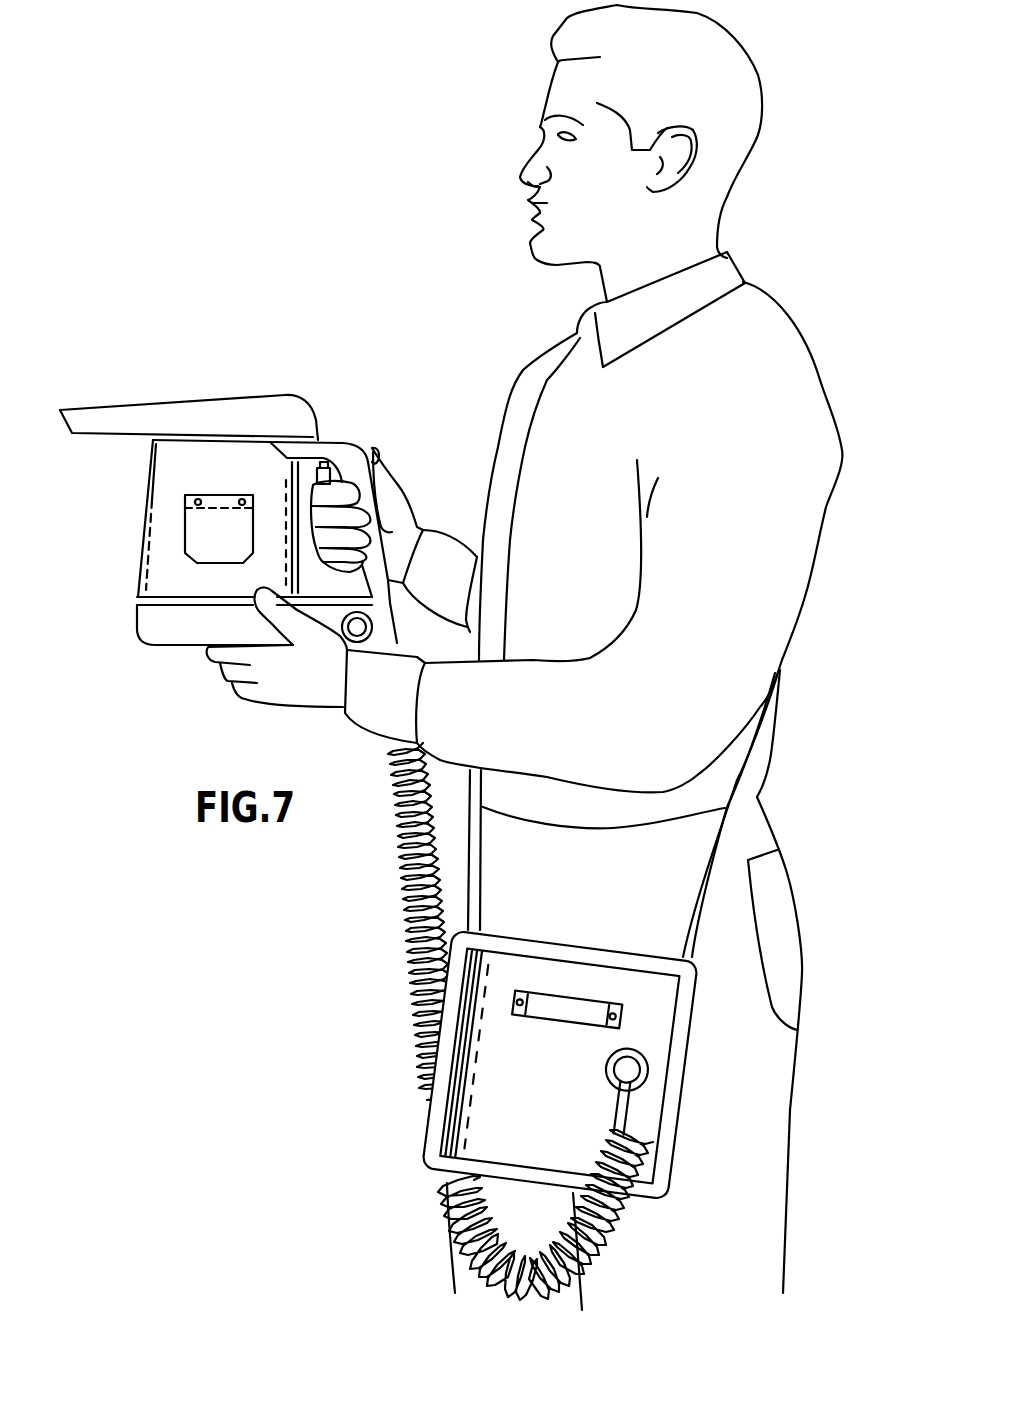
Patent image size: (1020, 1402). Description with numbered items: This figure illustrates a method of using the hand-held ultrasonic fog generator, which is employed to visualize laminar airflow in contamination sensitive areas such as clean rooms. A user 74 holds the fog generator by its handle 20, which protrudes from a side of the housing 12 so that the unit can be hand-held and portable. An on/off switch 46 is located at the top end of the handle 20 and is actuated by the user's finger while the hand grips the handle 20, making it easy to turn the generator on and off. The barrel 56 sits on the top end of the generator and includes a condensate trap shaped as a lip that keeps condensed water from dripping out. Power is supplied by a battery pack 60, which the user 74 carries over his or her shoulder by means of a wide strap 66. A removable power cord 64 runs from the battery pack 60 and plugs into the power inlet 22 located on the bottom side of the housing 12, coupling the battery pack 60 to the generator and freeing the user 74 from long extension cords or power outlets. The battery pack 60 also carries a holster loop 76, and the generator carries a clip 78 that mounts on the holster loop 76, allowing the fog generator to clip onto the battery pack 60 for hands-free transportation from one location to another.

The housing 12 is at (130, 568).
The handle 20 is at (342, 442).
The power inlet 22 is at (364, 631).
The on/off switch 46 is at (320, 475).
The barrel 56 is at (102, 435).
The battery pack 60 is at (423, 1118).
The removable power cord 64 is at (405, 900).
The wide strap 66 is at (527, 385).
The user 74 is at (758, 90).
The holster loop 76 is at (572, 988).
The clip 78 is at (183, 527).